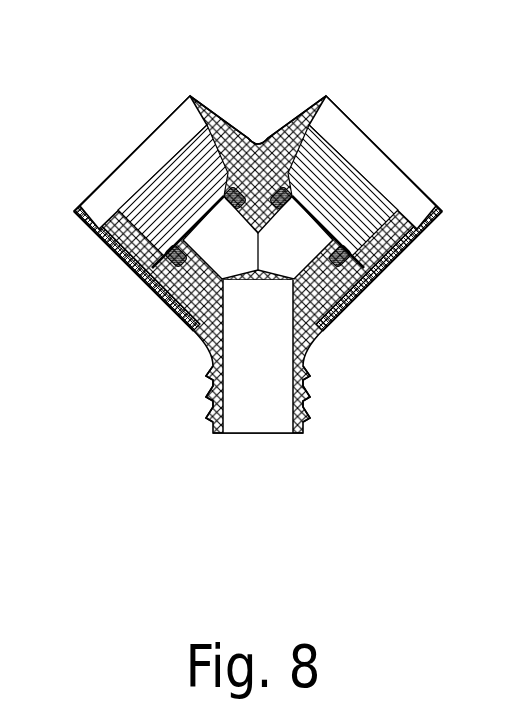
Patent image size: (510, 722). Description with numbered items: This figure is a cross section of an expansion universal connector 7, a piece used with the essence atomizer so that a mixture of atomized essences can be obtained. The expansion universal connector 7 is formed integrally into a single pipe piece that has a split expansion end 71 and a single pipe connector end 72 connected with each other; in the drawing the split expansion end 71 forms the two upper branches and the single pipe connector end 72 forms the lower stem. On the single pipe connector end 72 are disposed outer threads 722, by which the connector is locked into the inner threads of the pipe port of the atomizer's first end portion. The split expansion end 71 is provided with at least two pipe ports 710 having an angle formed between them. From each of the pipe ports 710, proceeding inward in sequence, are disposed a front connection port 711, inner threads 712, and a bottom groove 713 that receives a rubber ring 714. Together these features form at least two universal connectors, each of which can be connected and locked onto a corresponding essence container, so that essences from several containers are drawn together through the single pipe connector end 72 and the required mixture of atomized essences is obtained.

The expansion universal connector 7 is at (413, 237).
The split expansion end 71 is at (273, 138).
The pipe port 710 is at (76, 206).
The front connection port 711 is at (170, 133).
The inner threads 712 is at (162, 208).
The bottom groove 713 is at (165, 298).
The rubber ring 714 is at (130, 273).
The single pipe connector end 72 is at (258, 435).
The outer threads 722 is at (307, 383).